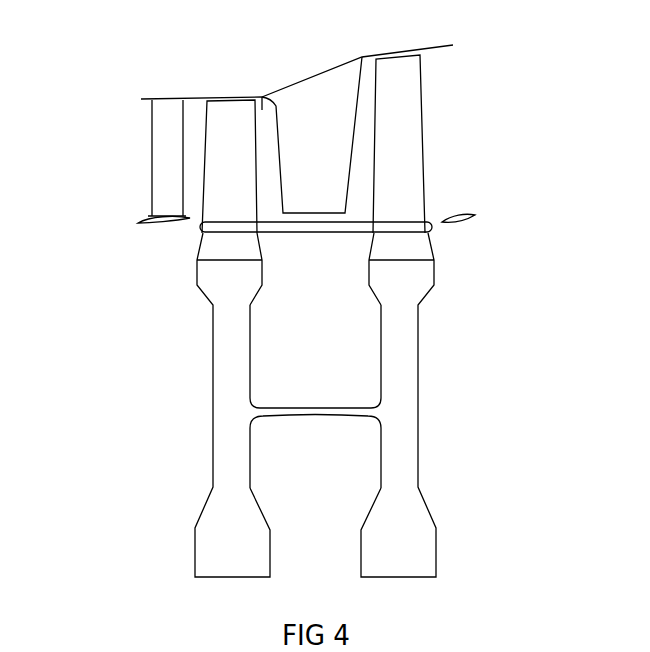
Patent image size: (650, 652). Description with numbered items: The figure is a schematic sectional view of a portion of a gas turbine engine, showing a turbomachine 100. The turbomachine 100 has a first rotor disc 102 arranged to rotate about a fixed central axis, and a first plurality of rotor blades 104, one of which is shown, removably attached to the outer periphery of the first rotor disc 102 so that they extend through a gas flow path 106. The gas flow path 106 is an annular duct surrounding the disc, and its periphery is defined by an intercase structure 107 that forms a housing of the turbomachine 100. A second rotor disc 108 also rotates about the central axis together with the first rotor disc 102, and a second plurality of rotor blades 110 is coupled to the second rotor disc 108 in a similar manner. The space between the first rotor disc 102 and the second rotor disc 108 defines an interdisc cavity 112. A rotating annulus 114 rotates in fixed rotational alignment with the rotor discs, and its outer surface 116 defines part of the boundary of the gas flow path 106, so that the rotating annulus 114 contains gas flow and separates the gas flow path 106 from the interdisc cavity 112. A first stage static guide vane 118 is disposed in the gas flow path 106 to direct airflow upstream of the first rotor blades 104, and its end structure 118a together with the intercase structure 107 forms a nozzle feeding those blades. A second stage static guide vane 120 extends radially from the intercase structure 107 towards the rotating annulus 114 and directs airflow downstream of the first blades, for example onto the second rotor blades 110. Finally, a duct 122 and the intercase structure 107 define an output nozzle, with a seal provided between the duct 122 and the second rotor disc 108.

The turbomachine 100 is at (91, 85).
The first rotor disc 102 is at (213, 358).
The first plurality of rotor blades 104 is at (222, 100).
The gas flow path 106 is at (262, 97).
The intercase structure 107 is at (362, 55).
The second rotor disc 108 is at (418, 358).
The second plurality of rotor blades 110 is at (424, 104).
The interdisc cavity 112 is at (330, 366).
The rotating annulus 114 is at (302, 249).
The outer surface 116 is at (355, 218).
The first stage static guide vane 118 is at (152, 163).
The end structure 118a is at (155, 226).
The second stage static guide vane 120 is at (333, 150).
The duct 122 is at (465, 222).